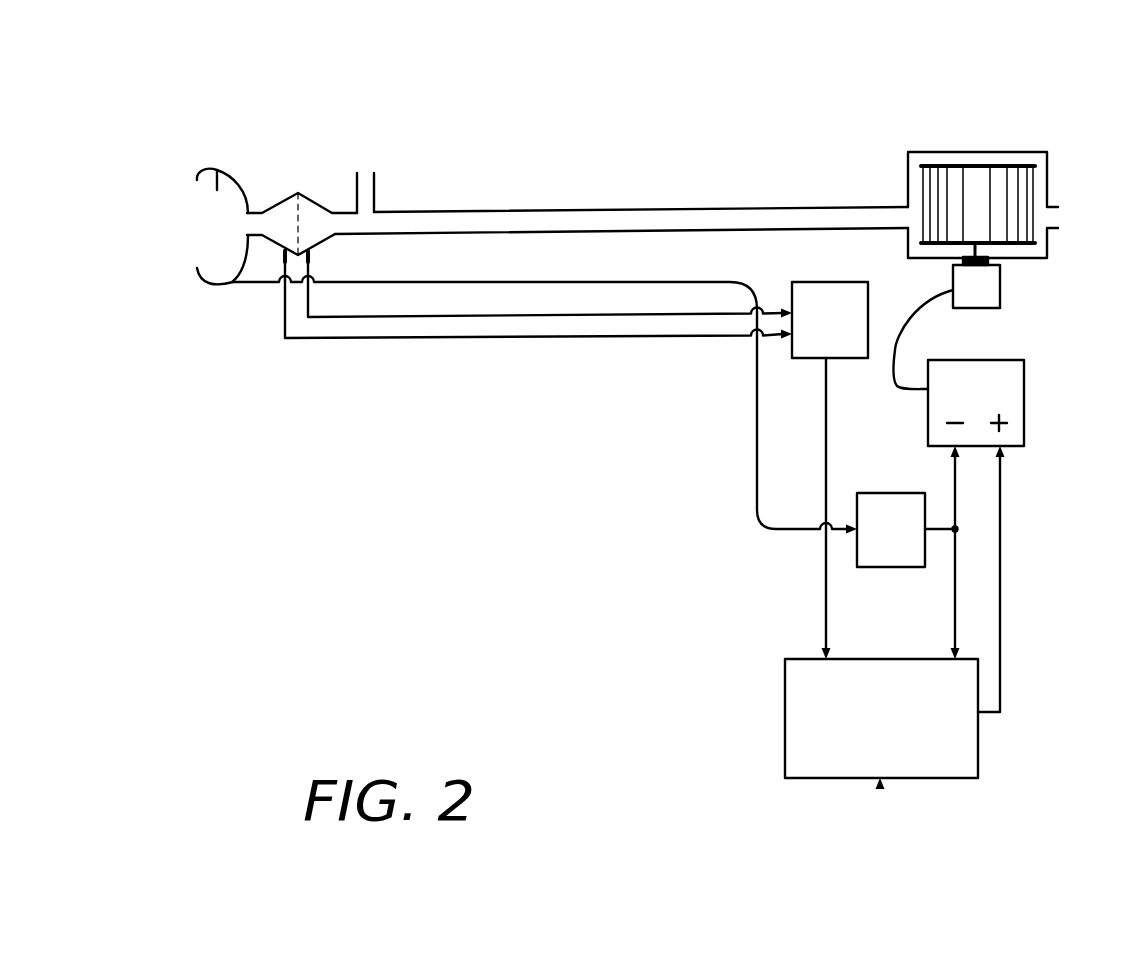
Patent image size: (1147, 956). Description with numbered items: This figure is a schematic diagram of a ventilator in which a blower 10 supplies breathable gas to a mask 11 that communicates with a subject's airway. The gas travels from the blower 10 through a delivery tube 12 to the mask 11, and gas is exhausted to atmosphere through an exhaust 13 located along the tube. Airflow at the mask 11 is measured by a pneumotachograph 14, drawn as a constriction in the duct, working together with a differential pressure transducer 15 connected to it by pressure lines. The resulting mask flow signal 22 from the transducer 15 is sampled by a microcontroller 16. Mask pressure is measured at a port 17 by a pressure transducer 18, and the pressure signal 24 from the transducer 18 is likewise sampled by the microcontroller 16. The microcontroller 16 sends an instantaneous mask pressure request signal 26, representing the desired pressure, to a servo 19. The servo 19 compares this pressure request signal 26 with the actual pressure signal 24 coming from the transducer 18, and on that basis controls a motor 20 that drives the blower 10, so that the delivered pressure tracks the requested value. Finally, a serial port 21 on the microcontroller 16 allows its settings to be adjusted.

The blower 10 is at (1003, 152).
The mask 11 is at (217, 192).
The delivery tube 12 is at (605, 208).
The exhaust 13 is at (377, 190).
The pneumotachograph 14 is at (310, 192).
The differential pressure transducer 15 is at (792, 345).
The microcontroller 16 is at (978, 738).
The port 17 is at (233, 283).
The pressure transducer 18 is at (892, 567).
The servo 19 is at (1024, 392).
The motor 20 is at (1000, 280).
The serial port 21 is at (880, 788).
The mask flow signal 22 is at (826, 438).
The pressure signal 24 is at (955, 582).
The pressure request signal 26 is at (1000, 533).